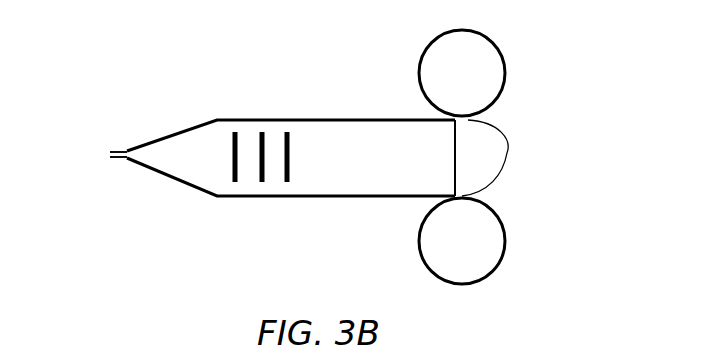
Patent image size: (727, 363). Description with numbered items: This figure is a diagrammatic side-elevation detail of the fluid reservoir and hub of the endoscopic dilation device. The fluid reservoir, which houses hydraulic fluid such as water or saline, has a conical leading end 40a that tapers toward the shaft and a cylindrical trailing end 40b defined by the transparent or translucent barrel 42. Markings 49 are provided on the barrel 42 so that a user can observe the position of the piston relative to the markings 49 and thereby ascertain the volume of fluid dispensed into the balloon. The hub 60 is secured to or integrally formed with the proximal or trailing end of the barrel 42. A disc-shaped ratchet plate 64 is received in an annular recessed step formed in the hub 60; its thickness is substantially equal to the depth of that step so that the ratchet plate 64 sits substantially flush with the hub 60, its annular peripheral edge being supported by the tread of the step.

The barrel 42 is at (313, 147).
The conical leading end 40a is at (163, 172).
The cylindrical trailing end 40b is at (437, 163).
The markings 49 is at (233, 183).
The hub 60 is at (507, 145).
The ratchet plate 64 is at (457, 171).